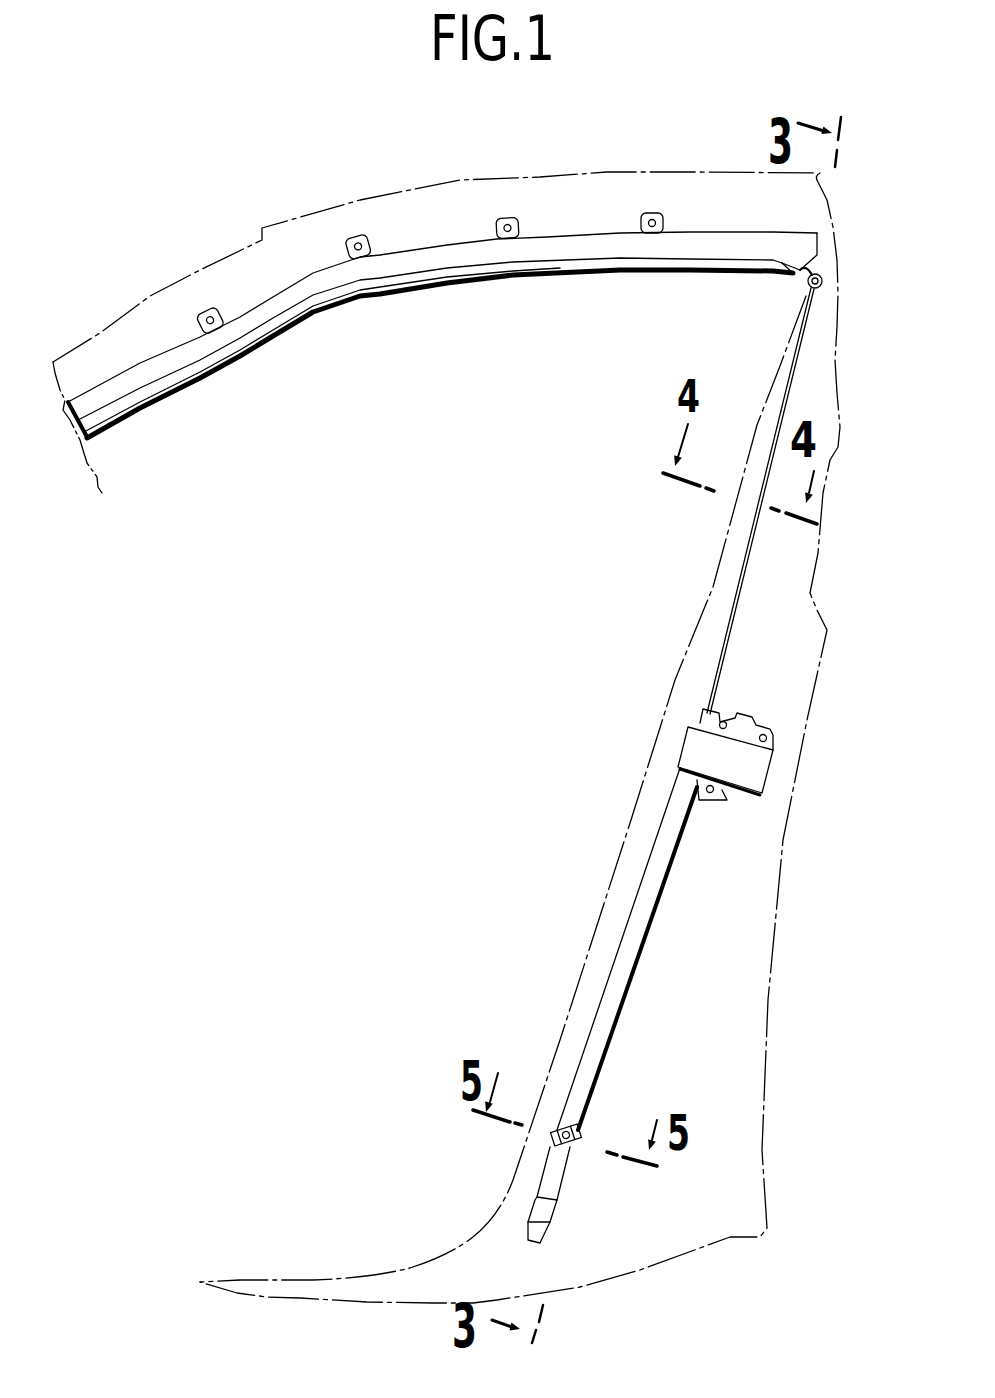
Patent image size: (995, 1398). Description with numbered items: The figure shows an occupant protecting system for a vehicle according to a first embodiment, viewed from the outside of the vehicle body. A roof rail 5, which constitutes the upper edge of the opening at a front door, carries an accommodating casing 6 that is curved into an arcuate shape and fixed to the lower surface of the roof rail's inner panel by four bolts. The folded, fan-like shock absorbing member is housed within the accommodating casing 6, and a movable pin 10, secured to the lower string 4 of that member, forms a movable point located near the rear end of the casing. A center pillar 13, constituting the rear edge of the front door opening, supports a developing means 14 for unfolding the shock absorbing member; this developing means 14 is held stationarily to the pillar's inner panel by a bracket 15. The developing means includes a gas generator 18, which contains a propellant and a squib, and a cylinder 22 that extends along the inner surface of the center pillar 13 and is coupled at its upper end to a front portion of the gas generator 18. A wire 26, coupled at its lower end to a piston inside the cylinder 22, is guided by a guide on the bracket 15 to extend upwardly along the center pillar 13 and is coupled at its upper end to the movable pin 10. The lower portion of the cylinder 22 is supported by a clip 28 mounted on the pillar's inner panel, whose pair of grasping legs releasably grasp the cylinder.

The lower string 4 is at (801, 283).
The roof rail 5 is at (471, 191).
The accommodating casing 6 is at (319, 258).
The movable pin 10 is at (817, 262).
The center pillar 13 is at (713, 587).
The developing means 14 is at (706, 739).
The bracket 15 is at (748, 732).
The gas generator 18 is at (684, 754).
The cylinder 22 is at (622, 978).
The wire 26 is at (723, 654).
The clip 28 is at (578, 1142).